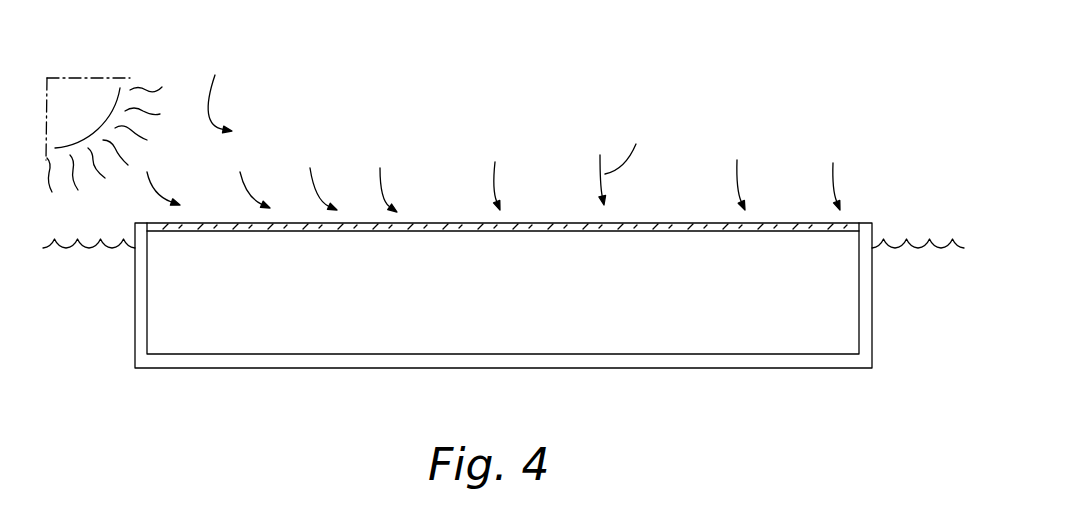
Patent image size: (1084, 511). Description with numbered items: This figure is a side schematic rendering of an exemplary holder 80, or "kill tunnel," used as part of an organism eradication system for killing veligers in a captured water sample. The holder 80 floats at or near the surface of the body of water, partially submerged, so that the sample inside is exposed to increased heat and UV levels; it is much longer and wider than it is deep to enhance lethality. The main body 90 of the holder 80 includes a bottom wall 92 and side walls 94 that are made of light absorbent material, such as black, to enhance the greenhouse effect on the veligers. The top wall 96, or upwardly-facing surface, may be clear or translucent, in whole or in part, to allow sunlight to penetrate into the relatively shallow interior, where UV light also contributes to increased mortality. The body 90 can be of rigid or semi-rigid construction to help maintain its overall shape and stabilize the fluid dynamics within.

The holder 80 is at (677, 68).
The main body 90 is at (503, 286).
The bottom wall 92 is at (703, 368).
The side walls 94 is at (135, 312).
The top wall 96 is at (445, 222).